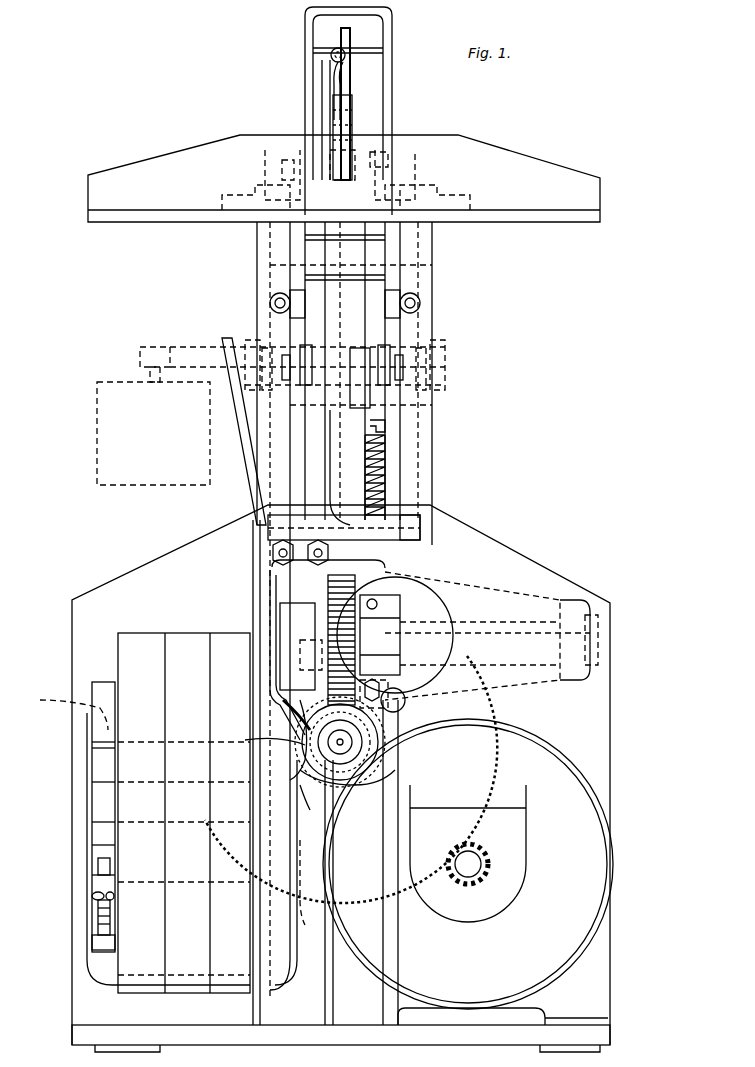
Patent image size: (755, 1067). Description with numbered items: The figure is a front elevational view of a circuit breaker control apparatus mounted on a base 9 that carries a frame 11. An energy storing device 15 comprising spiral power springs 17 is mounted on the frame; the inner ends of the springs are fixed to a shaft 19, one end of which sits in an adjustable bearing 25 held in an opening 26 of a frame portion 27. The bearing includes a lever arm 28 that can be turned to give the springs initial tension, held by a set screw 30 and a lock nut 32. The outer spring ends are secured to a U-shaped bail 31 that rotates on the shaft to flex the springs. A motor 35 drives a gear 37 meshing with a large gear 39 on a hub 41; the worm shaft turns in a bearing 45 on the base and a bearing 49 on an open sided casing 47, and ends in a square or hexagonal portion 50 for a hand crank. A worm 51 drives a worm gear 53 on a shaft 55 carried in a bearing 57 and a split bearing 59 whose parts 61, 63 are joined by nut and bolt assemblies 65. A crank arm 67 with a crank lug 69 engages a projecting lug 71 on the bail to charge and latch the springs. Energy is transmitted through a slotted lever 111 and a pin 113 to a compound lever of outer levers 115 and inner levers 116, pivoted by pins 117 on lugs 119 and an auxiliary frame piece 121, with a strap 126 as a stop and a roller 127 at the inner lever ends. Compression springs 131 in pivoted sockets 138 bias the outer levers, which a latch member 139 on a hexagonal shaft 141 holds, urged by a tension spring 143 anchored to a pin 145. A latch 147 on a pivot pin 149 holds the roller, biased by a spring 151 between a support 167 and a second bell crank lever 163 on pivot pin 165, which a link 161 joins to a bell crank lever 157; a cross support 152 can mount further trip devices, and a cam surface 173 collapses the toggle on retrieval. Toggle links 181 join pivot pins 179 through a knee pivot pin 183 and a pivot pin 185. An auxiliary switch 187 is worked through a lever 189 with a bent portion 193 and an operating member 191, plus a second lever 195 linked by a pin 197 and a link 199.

The base 9 is at (330, 1045).
The frame 11 is at (400, 950).
The energy storing device 15 is at (341, 775).
The spiral power springs 17 is at (120, 995).
The shaft 19 is at (122, 822).
The adjustable bearing 25 is at (103, 770).
The opening 26 is at (74, 719).
The portion of the frame 27 is at (103, 682).
The lever arm 28 is at (100, 848).
The set screw 30 is at (98, 918).
The U-shaped bail 31 is at (285, 975).
The lock nut 32 is at (92, 896).
The motor 35 is at (595, 932).
The gear 37 is at (490, 866).
The large gear 39 is at (495, 706).
The hub 41 is at (378, 740).
The bearing 45 is at (345, 785).
The open sided casing 47 is at (495, 590).
The bearing 49 is at (390, 782).
The square or hexagonal portion 50 is at (370, 760).
The worm 51 is at (300, 730).
The worm gear 53 is at (276, 690).
The shaft 55 is at (475, 630).
The bearing 57 is at (565, 598).
The split bearing 59 is at (400, 610).
The part of the split bearing 61 is at (400, 690).
The portion of the split bearing 63 is at (420, 570).
The nut and bolt assemblies 65 is at (273, 556).
The crank arm 67 is at (328, 625).
The crank lug 69 is at (300, 648).
The projecting lug 71 is at (290, 712).
The slotted lever 111 is at (313, 891).
The pin 113 is at (320, 795).
The outer levers 115 is at (290, 475).
The inner levers 116 is at (320, 258).
The pivot pins 117 is at (275, 175).
The lugs 119 is at (230, 200).
The U-shaped auxiliary frame piece 121 is at (386, 56).
The U shaped strap 126 is at (390, 256).
The roller 127 is at (392, 150).
The compression spring 131 is at (272, 312).
The pivoted sockets 138 is at (275, 295).
The latch member 139 is at (320, 515).
The hexagonal shaft 141 is at (420, 520).
The tension spring 143 is at (388, 475).
The pin 145 is at (365, 430).
The latch 147 is at (400, 192).
The pivot pin 149 is at (390, 158).
The spring 151 is at (331, 56).
The cross support 152 is at (602, 210).
The bell crank lever 157 is at (352, 105).
The link 161 is at (334, 100).
The second bell crank lever 163 is at (341, 32).
The pivot pin 165 is at (365, 42).
The support 167 is at (322, 100).
The cam surface 173 is at (283, 165).
The pivot pins 179 is at (275, 385).
The toggle links 181 is at (410, 270).
The knee pivot pin 183 is at (250, 348).
The pivot pin 185 is at (258, 378).
The auxiliary switch 187 is at (97, 468).
The lever 189 is at (235, 440).
The auxiliary switch operating member 191 is at (148, 348).
The bent portion 193 is at (273, 548).
The second lever 195 is at (388, 440).
The pin 197 is at (385, 400).
The link 199 is at (372, 355).